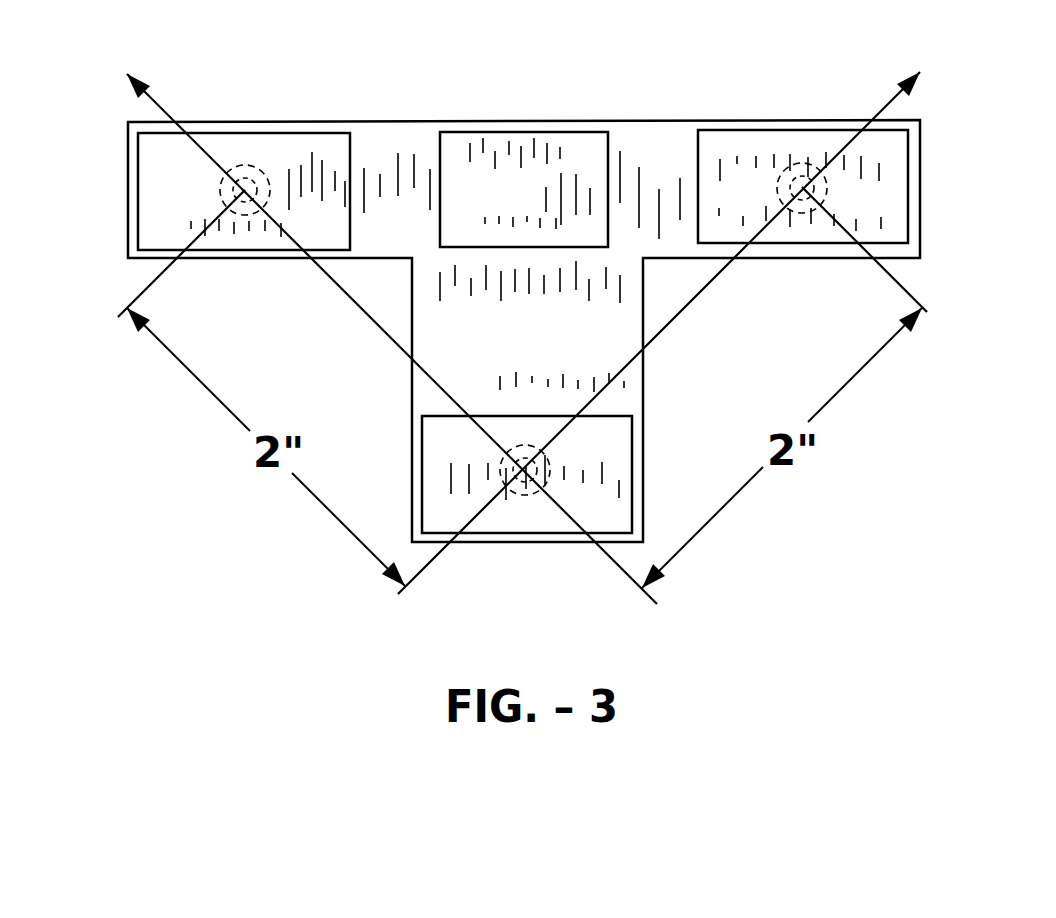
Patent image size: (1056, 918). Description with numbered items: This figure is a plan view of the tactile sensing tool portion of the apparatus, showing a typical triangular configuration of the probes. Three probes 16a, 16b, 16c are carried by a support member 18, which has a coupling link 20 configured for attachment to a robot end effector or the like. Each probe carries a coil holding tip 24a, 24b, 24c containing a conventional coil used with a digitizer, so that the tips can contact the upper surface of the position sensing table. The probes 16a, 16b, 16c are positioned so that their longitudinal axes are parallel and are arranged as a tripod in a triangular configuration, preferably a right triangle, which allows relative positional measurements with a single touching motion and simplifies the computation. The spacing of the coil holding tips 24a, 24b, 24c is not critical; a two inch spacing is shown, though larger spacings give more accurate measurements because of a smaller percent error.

The probe 16a is at (438, 478).
The probe 16b is at (897, 157).
The probe 16c is at (331, 143).
The support member 18 is at (635, 147).
The coupling link 20 is at (498, 155).
The coil holding tip 24a is at (533, 495).
The coil holding tip 24b is at (785, 163).
The coil holding tip 24c is at (250, 165).